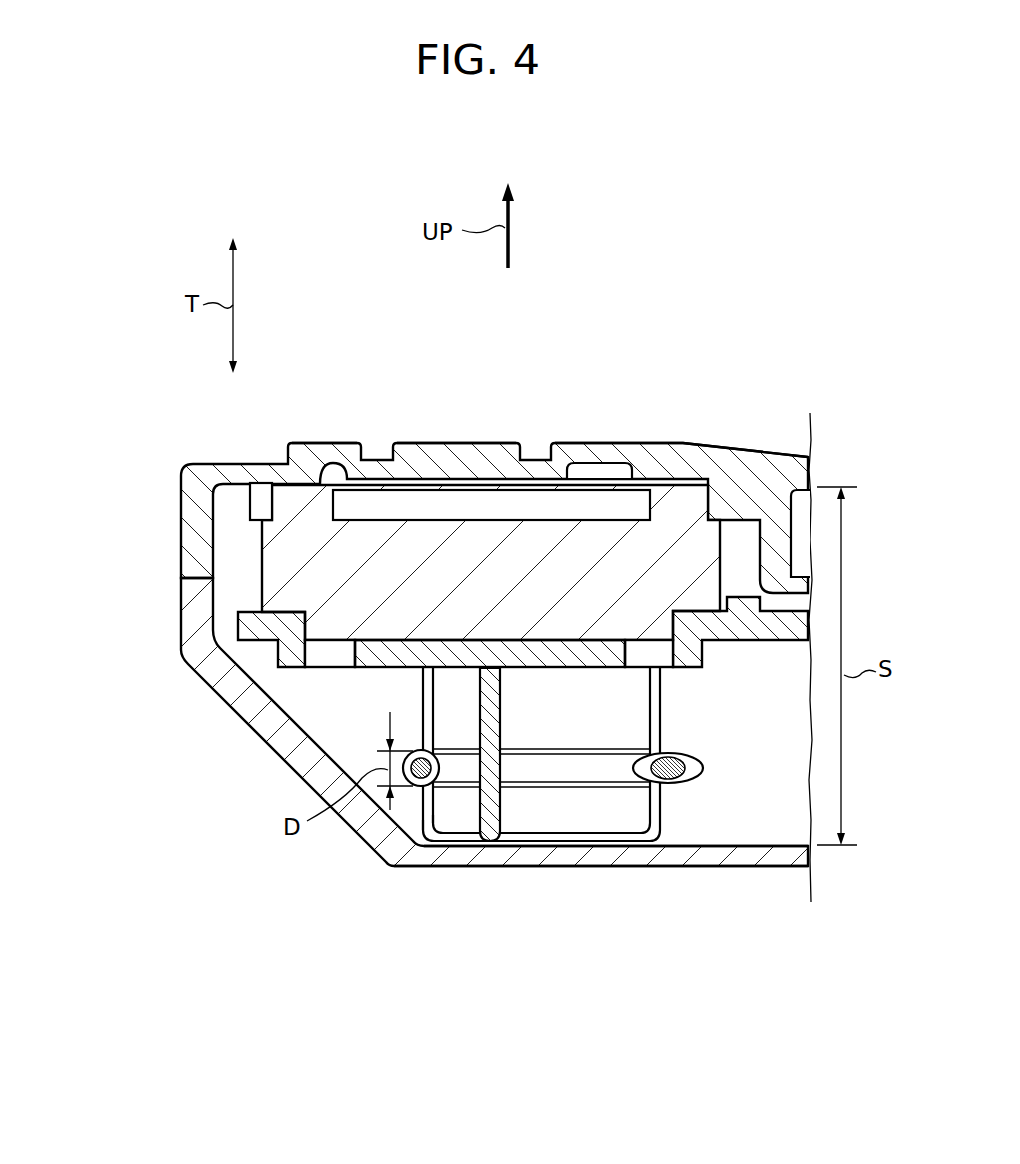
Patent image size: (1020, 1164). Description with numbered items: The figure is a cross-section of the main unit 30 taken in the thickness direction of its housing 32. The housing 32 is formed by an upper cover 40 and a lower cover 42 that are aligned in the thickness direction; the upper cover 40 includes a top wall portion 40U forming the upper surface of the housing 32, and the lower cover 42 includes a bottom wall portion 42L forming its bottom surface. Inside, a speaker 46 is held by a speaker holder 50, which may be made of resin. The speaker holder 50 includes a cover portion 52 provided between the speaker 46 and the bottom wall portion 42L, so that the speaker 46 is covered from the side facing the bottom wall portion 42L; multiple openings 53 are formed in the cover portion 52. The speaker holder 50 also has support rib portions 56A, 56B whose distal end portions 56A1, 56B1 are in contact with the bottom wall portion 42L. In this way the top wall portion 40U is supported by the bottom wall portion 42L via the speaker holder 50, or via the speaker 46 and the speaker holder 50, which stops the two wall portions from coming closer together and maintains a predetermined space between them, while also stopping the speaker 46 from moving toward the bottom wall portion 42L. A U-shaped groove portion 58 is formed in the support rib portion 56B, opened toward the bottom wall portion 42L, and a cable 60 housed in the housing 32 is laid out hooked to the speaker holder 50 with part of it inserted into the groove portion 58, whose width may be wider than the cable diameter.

The main unit 30 is at (160, 447).
The housing 32 is at (100, 548).
The upper cover 40 is at (181, 568).
The top wall portion 40U is at (663, 443).
The lower cover 42 is at (181, 608).
The bottom wall portion 42L is at (587, 867).
The speaker 46 is at (485, 534).
The speaker holder 50 is at (373, 668).
The cover portion 52 is at (597, 668).
The openings 53 is at (332, 662).
The groove portion 58 is at (493, 698).
The support rib portion 56A is at (613, 817).
The distal end portion 56A1 is at (605, 846).
The support rib portion 56B is at (500, 795).
The distal end portion 56B1 is at (492, 846).
The cable 60 is at (627, 787).